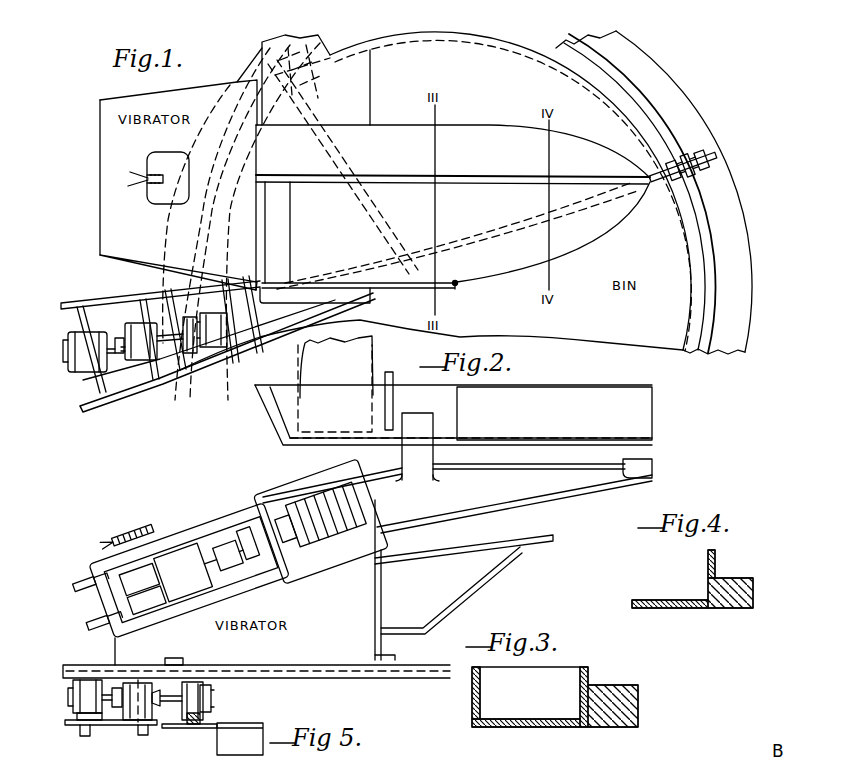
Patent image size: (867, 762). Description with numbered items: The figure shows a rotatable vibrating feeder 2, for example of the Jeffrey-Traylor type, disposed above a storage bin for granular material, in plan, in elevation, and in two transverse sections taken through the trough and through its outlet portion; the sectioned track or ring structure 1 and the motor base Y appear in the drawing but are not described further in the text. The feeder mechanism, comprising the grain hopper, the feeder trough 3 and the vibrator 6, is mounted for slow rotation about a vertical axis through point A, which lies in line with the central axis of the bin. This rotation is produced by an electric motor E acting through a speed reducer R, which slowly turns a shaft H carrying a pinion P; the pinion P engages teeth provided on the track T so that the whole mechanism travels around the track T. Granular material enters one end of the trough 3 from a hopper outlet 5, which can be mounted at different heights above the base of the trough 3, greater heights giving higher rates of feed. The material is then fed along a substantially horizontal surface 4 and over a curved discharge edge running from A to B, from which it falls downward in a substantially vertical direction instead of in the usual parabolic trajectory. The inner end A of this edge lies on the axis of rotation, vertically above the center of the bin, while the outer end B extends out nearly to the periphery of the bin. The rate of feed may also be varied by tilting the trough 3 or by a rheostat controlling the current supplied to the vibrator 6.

In FIG. 1, the circular track ring 1 is at (702, 134).
In FIG. 1, the vibrating feeder 2 is at (316, 80).
In FIG. 2, the vibrating feeder 2 is at (554, 413).
In FIG. 1, the feeder trough 3 is at (418, 284).
In FIG. 2, the feeder trough 3 is at (268, 408).
In FIG. 1, the substantially horizontal surface 4 is at (357, 242).
In FIG. 2, the substantially horizontal surface 4 is at (575, 450).
In FIG. 3, the substantially horizontal surface 4 is at (540, 719).
In FIG. 2, the hopper outlet 5 is at (340, 430).
In FIG. 1, the vibrator 6 is at (241, 221).
In FIG. 1, the inner end of discharge edge A is at (460, 273).
In FIG. 1, the outer end of discharge edge B is at (679, 181).
In FIG. 1, the track T is at (714, 240).
In FIG. 5, the track T is at (198, 723).
In FIG. 1, the electric motor E is at (70, 338).
In FIG. 5, the electric motor E is at (72, 694).
In FIG. 1, the speed reducer R is at (132, 330).
In FIG. 5, the speed reducer R is at (127, 716).
In FIG. 1, the shaft H is at (190, 353).
In FIG. 5, the shaft H is at (173, 703).
In FIG. 1, the pinion P is at (212, 347).
In FIG. 5, the pinion P is at (203, 693).
In FIG. 5, the motor base Y is at (88, 726).